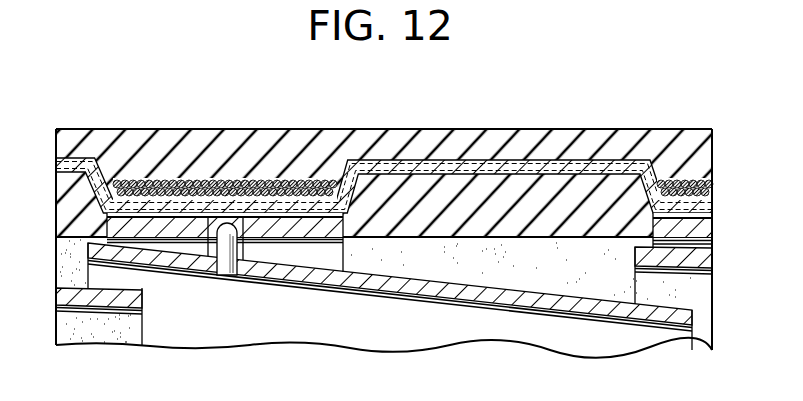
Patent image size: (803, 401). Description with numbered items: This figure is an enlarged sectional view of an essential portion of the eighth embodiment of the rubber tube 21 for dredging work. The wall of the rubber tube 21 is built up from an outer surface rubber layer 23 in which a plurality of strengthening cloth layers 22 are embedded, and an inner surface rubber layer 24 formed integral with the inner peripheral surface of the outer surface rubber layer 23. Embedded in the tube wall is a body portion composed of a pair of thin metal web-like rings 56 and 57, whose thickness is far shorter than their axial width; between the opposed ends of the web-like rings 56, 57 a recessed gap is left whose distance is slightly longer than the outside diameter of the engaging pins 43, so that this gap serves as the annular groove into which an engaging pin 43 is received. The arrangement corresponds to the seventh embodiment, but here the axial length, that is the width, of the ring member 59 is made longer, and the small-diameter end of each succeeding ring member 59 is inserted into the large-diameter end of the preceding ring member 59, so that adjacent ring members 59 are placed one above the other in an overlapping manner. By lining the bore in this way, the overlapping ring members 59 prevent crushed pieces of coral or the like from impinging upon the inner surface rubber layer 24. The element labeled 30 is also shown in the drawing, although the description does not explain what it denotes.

The rubber tube 21 is at (279, 122).
The strengthening cloth layers 22 is at (395, 162).
The outer surface rubber layer 23 is at (458, 143).
The inner surface rubber layer 24 is at (80, 172).
The electrode connector 30 is at (317, 180).
The engaging pins 43 is at (232, 242).
The web-like ring 56 is at (150, 228).
The web-like ring 57 is at (323, 238).
The ring member 59 is at (381, 283).